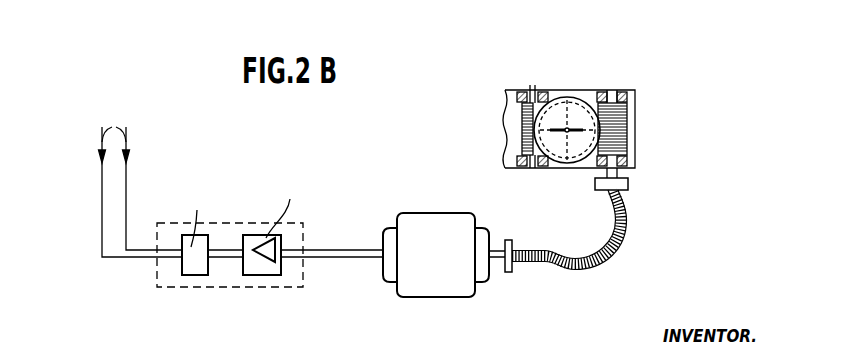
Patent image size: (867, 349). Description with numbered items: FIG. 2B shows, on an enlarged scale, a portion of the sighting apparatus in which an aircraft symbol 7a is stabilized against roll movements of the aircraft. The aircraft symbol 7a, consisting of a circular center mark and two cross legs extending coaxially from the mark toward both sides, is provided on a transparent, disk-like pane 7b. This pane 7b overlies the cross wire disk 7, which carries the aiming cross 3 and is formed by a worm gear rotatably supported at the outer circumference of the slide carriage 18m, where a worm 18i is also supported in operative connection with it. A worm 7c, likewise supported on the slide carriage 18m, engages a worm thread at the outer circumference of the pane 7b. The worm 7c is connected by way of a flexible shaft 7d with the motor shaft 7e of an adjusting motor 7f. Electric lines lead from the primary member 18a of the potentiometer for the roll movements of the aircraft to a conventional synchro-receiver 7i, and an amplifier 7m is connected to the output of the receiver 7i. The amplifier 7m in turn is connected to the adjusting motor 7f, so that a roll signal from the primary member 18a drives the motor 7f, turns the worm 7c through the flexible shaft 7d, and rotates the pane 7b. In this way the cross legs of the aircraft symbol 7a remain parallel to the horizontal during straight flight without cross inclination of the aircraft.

The primary member of the second potentiometer 18a is at (119, 162).
The synchro-receiver 7i is at (200, 270).
The amplifier 7m is at (260, 270).
The adjusting motor 7f is at (435, 278).
The motor shaft 7e is at (498, 253).
The flexible shaft 7d is at (612, 262).
The aircraft symbol 7a is at (545, 168).
The transparent disk-like pane 7b is at (578, 153).
The aiming cross 3 is at (560, 106).
The cross wire disk 7 is at (580, 102).
The worm 7c is at (623, 108).
The slide carriage 18m is at (636, 145).
The worm 18i is at (525, 110).